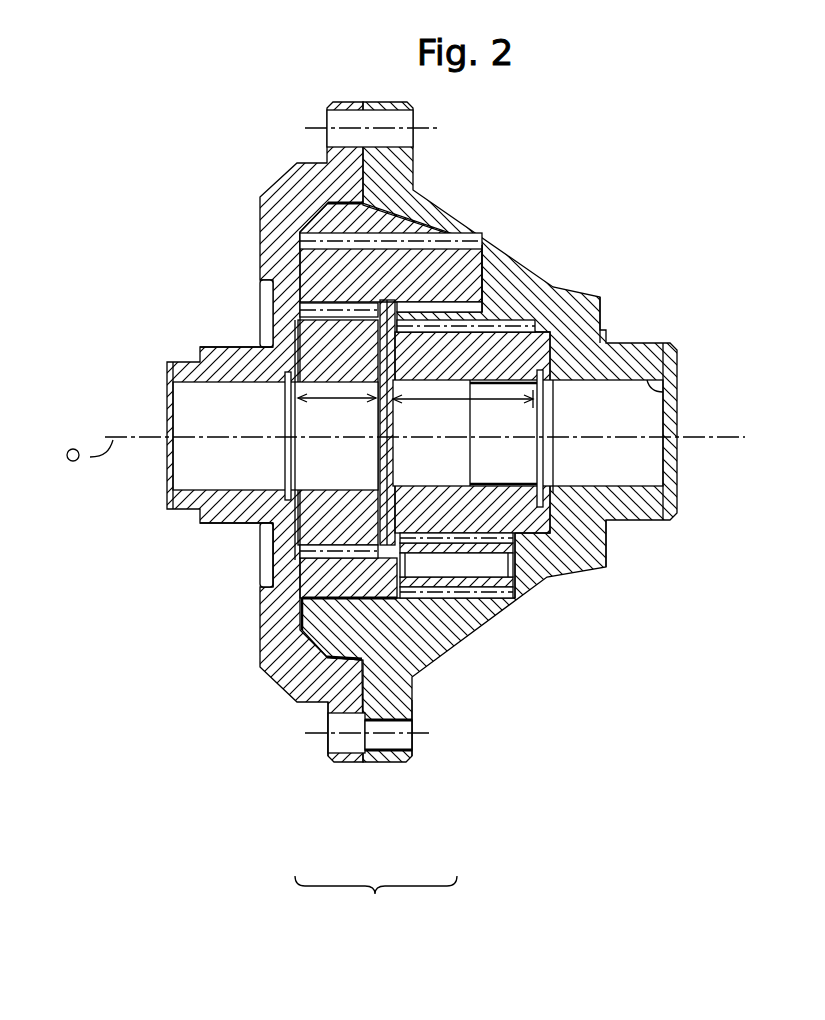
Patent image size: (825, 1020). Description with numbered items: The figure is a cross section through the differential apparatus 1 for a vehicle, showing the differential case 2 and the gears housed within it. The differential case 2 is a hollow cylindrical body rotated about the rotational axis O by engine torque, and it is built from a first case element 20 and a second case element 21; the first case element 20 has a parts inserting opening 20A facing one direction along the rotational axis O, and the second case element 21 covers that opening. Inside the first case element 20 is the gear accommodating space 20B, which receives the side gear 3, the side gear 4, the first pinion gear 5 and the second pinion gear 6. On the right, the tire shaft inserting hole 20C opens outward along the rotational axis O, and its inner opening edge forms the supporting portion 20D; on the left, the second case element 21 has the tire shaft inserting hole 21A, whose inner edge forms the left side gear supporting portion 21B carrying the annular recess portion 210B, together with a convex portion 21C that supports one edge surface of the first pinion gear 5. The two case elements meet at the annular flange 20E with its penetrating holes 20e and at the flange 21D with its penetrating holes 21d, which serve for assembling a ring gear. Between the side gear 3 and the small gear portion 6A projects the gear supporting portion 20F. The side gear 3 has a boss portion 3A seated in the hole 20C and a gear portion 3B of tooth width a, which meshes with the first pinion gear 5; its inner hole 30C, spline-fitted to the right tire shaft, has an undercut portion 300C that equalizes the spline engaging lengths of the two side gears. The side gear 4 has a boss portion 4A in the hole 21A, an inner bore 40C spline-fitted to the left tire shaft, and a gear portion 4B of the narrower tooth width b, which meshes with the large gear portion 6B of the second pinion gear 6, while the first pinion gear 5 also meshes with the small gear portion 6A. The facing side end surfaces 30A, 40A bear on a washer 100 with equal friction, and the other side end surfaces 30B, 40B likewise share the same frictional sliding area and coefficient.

The differential apparatus 1 is at (668, 128).
The differential case 2 is at (376, 902).
The first case element 20 is at (395, 768).
The parts inserting opening 20A is at (330, 604).
The gear accommodating space 20B is at (548, 565).
The tire shaft inserting hole 20C is at (648, 384).
The supporting portion 20D is at (605, 360).
The annular flange 20E is at (413, 716).
The penetrating holes 20e is at (413, 747).
The gear supporting portion 20F is at (505, 283).
The second case element 21 is at (343, 768).
The tire shaft inserting hole 21A is at (172, 480).
The left side gear supporting portion 21B is at (297, 321).
The convex portion 21C is at (300, 628).
The flange 21D is at (328, 708).
The penetrating holes 21d is at (327, 122).
The annular recess portion 210B is at (275, 553).
The side gear 3 is at (575, 330).
The boss portion 3A is at (606, 542).
The gear portion 3B is at (535, 552).
The side end surface 30A is at (455, 297).
The other side end surface 30B is at (655, 345).
The inner hole 30C is at (525, 437).
The undercut portion 300C is at (447, 485).
The side gear 4 is at (295, 430).
The boss portion 4A is at (205, 519).
The gear portion 4B is at (262, 562).
The side end surface 40A is at (297, 327).
The other side end surface 40B is at (285, 352).
The side gear spline bore 40C is at (203, 467).
The first pinion gear 5 is at (445, 583).
The second pinion gear 6 is at (393, 228).
The small gear portion 6A is at (413, 303).
The large gear portion 6B is at (325, 262).
The washer 100 is at (390, 488).
The tooth width a is at (457, 399).
The tooth width b is at (280, 407).
The rotational axis O is at (405, 430).